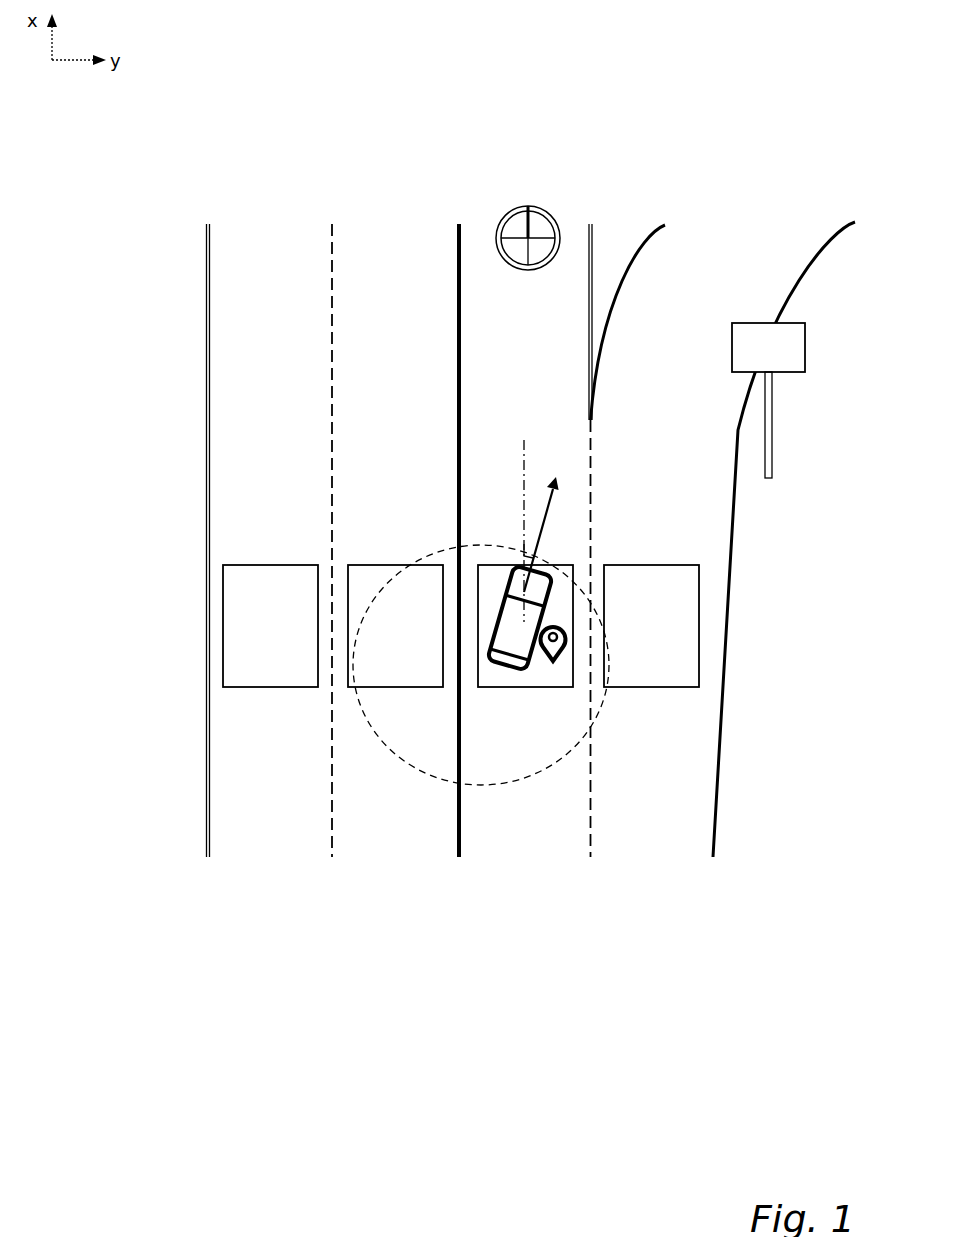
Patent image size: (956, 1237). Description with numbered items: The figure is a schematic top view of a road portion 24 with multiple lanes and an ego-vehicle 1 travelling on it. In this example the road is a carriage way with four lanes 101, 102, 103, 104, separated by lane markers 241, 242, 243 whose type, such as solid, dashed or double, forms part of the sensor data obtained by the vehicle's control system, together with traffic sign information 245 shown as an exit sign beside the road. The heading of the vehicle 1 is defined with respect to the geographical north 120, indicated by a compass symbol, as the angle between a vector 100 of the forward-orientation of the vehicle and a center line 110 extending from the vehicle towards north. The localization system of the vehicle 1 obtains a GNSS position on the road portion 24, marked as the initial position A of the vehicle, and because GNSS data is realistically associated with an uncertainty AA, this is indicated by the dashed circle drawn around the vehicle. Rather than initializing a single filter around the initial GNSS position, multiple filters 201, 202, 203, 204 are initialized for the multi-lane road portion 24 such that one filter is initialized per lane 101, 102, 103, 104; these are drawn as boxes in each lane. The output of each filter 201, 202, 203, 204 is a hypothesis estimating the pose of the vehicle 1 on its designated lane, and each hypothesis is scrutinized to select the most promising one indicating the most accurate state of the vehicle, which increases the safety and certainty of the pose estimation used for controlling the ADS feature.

The vehicle 1 is at (518, 669).
The road portion 24 is at (175, 429).
The vector 100 is at (553, 506).
The lane 101 is at (288, 822).
The lane 102 is at (411, 822).
The lane 103 is at (545, 822).
The lane 104 is at (669, 822).
The center line 110 is at (525, 483).
The geographical north 120 is at (549, 213).
The filter 201 is at (238, 565).
The filter 202 is at (360, 565).
The filter 203 is at (586, 565).
The filter 204 is at (695, 596).
The lane marker 241 is at (610, 401).
The lane marker 242 is at (475, 370).
The lane marker 243 is at (345, 343).
The traffic sign information 245 is at (805, 343).
The initial position A is at (553, 664).
The uncertainty AA is at (611, 732).